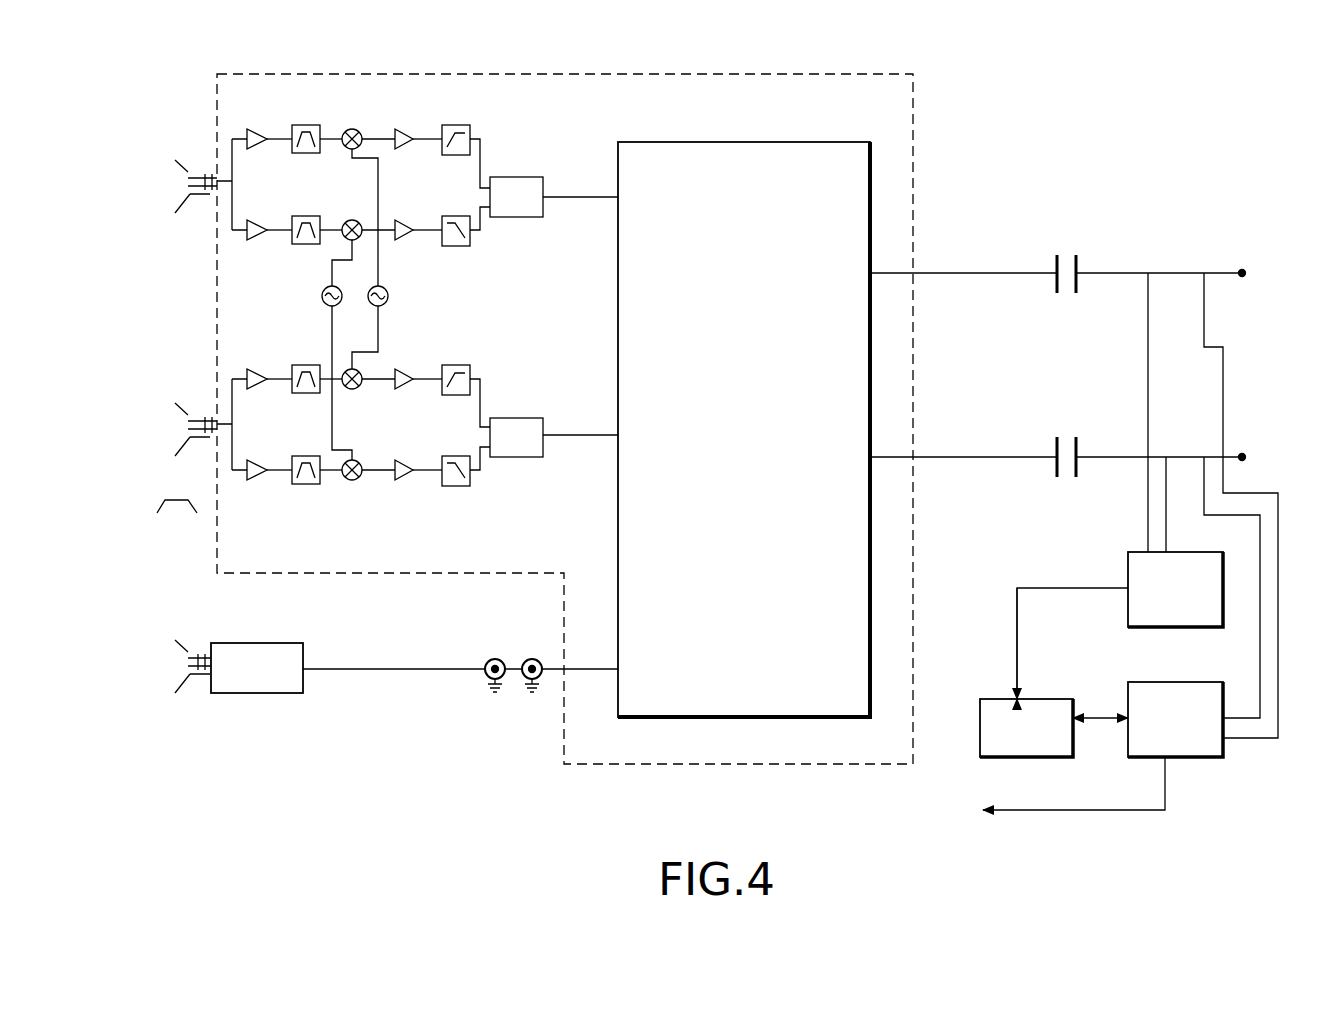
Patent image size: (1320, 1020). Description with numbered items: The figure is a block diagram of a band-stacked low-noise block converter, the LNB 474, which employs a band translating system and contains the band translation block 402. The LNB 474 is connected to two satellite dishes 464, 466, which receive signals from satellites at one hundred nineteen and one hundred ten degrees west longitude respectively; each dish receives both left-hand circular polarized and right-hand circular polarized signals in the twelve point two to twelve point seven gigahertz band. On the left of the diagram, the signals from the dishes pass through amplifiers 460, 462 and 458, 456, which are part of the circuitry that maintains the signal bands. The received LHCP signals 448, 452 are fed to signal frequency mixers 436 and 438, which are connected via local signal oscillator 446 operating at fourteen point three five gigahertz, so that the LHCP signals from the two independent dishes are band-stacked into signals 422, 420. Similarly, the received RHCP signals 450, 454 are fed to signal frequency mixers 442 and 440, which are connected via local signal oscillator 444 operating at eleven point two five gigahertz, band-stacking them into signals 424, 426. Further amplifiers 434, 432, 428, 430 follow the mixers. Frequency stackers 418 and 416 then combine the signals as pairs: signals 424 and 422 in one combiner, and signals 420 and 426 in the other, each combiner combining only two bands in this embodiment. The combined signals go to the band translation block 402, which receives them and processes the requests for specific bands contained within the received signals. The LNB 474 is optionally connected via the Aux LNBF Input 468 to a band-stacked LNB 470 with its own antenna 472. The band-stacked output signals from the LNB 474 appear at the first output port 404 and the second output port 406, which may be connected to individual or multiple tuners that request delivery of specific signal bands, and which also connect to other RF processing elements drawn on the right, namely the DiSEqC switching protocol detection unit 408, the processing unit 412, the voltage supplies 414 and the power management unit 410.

The band translation block 402 is at (780, 142).
The port 1 404 is at (1244, 271).
The port 2 406 is at (1244, 455).
The DiSEqC 2.0/XMT switching protocol detection unit 408 is at (1128, 554).
The power management unit 410 is at (1128, 686).
The processing unit 412 is at (980, 702).
The voltage supplies 414 is at (1040, 812).
The frequency stacker 416 is at (527, 418).
The frequency stacker 418 is at (525, 177).
The signal 420 is at (470, 365).
The signal 422 is at (470, 125).
The signal 424 is at (456, 247).
The signal 426 is at (458, 487).
The amplifier 428 is at (404, 391).
The amplifier 430 is at (404, 482).
The amplifier 432 is at (404, 242).
The amplifier 434 is at (404, 127).
The signal frequency mixer 436 is at (356, 128).
The signal frequency mixer 438 is at (354, 390).
The signal frequency mixer 440 is at (354, 481).
The signal frequency mixer 442 is at (352, 219).
The local signal oscillator 444 is at (322, 296).
The local signal oscillator 446 is at (385, 304).
The LHCP signal 448 is at (306, 123).
The RHCP signal 450 is at (296, 246).
The LHCP signal 452 is at (306, 363).
The RHCP signal 454 is at (296, 486).
The amplifier 456 is at (257, 458).
The amplifier 458 is at (257, 367).
The amplifier 460 is at (257, 127).
The amplifier 462 is at (257, 218).
The satellite dish 464 is at (189, 181).
The satellite dish 466 is at (189, 423).
The Aux LNBF Input 468 is at (525, 660).
The band-stacked LNB 470 is at (255, 643).
The antenna 472 is at (189, 666).
The LNB 474 is at (912, 236).